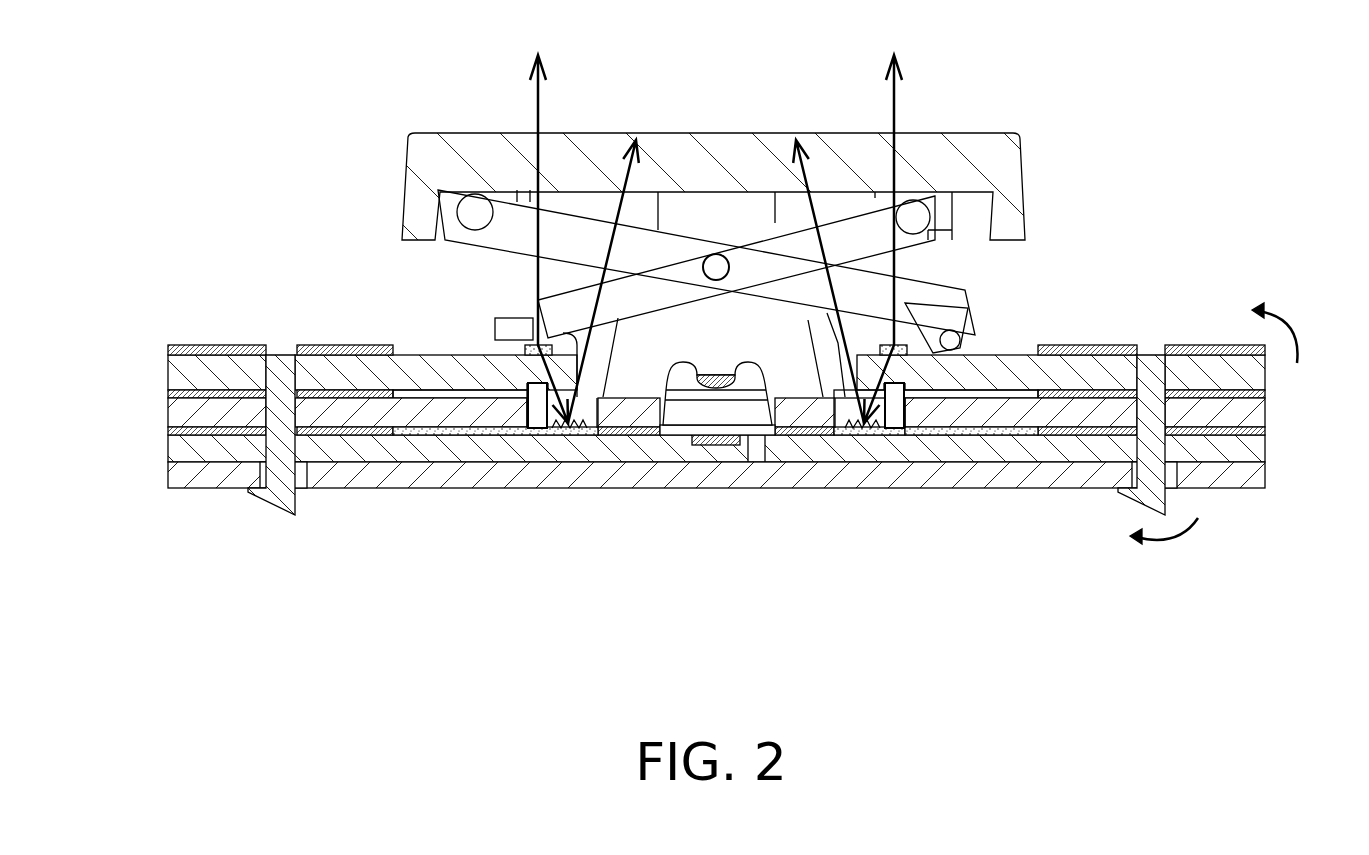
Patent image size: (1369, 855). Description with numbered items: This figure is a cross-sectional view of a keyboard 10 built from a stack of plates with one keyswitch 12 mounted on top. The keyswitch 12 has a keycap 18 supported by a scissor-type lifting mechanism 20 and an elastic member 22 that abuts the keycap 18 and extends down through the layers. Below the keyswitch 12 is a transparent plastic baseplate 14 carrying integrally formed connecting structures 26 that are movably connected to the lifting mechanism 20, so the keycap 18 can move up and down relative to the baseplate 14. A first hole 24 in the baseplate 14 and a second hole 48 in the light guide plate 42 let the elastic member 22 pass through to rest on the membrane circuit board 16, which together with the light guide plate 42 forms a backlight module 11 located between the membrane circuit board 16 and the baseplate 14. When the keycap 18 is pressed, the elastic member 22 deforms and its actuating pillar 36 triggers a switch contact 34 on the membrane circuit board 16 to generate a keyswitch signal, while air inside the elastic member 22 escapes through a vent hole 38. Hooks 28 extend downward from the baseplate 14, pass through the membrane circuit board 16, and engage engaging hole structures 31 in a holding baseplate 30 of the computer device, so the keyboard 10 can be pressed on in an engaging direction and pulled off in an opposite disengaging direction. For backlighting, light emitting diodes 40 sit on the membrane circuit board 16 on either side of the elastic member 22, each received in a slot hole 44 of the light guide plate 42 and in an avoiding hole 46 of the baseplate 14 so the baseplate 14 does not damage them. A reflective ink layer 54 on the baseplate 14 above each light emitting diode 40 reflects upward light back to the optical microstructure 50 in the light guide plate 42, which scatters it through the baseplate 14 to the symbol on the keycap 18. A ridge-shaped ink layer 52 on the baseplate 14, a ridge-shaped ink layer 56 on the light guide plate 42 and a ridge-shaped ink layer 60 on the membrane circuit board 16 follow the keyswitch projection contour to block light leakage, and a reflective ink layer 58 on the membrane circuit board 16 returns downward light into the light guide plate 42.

The keyboard 10 is at (278, 92).
The backlight module 11 is at (138, 633).
The keyswitch 12 is at (1172, 95).
The baseplate 14 is at (156, 373).
The membrane circuit board 16 is at (156, 450).
The keycap 18 is at (1027, 150).
The lifting mechanism 20 is at (958, 298).
The elastic member 22 is at (978, 224).
The first hole 24 is at (825, 375).
The connecting structure 26 is at (505, 320).
The hook 28 is at (285, 505).
The holding baseplate 30 is at (156, 483).
The engaging hole structure 31 is at (308, 478).
The switch contact 34 is at (722, 447).
The actuating pillar 36 is at (710, 382).
The vent hole 38 is at (758, 455).
The light emitting diode 40 is at (540, 430).
The light guide plate 42 is at (156, 412).
The slot hole 44 is at (513, 432).
The avoiding hole 46 is at (483, 362).
The second hole 48 is at (845, 412).
The optical microstructure 50 is at (572, 425).
The ridge-shaped ink layer 52 is at (1213, 345).
The reflective ink layer 54 is at (537, 345).
The ridge-shaped ink layer 56 is at (1258, 395).
The reflective ink layer 58 is at (997, 432).
The ridge-shaped ink layer 60 is at (1258, 432).